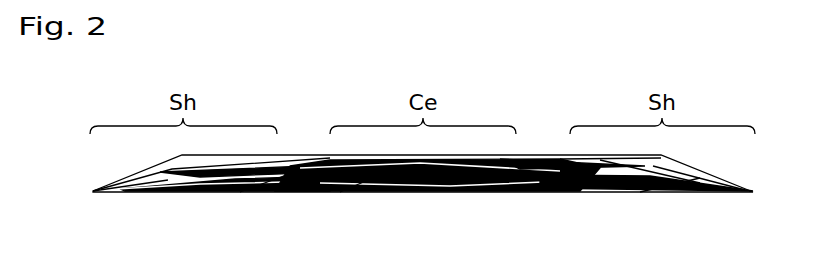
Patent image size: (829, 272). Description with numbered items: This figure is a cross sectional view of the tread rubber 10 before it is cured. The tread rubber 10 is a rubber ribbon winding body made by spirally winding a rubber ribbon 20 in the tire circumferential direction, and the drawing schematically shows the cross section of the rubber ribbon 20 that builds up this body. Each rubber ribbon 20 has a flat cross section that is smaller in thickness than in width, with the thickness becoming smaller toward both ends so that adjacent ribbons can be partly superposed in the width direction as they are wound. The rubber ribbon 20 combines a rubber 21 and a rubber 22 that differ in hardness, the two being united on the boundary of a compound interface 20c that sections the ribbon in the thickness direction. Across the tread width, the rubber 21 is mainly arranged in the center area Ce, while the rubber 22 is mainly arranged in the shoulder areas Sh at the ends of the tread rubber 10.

The tread rubber 10 is at (538, 155).
The rubber ribbon 20 is at (273, 192).
The compound interface 20c is at (167, 192).
The rubber 21 is at (393, 192).
The rubber 22 is at (680, 192).